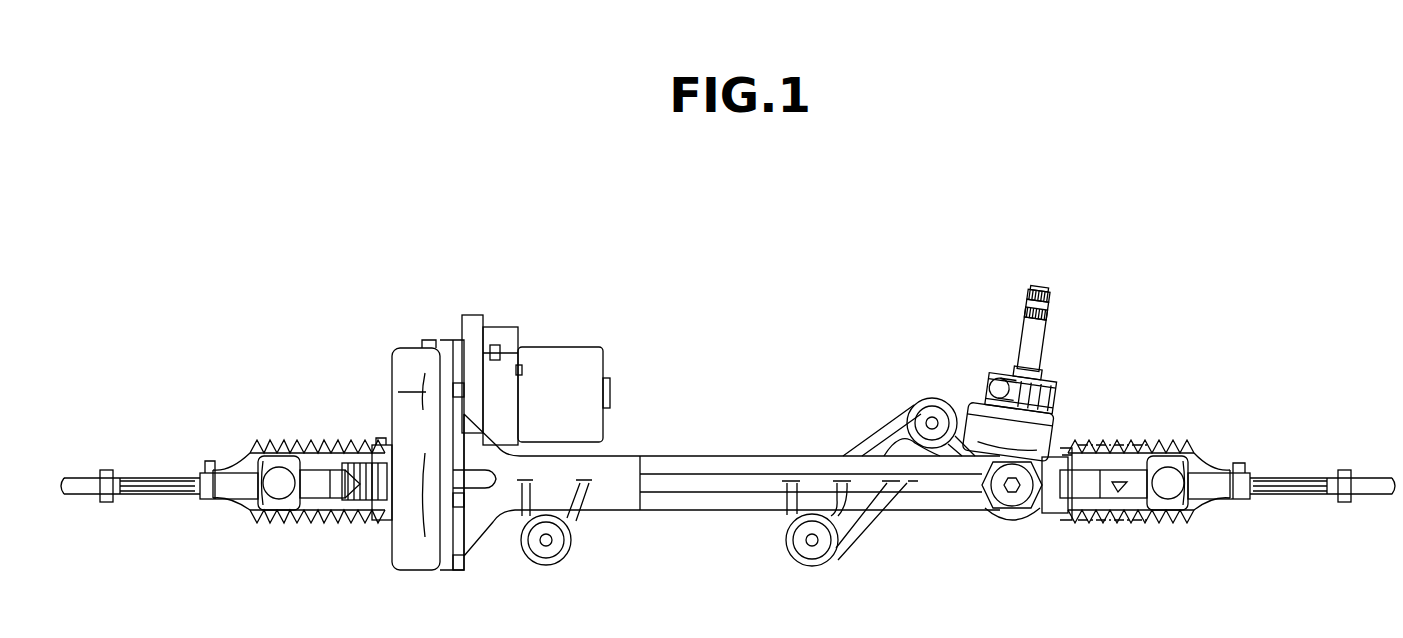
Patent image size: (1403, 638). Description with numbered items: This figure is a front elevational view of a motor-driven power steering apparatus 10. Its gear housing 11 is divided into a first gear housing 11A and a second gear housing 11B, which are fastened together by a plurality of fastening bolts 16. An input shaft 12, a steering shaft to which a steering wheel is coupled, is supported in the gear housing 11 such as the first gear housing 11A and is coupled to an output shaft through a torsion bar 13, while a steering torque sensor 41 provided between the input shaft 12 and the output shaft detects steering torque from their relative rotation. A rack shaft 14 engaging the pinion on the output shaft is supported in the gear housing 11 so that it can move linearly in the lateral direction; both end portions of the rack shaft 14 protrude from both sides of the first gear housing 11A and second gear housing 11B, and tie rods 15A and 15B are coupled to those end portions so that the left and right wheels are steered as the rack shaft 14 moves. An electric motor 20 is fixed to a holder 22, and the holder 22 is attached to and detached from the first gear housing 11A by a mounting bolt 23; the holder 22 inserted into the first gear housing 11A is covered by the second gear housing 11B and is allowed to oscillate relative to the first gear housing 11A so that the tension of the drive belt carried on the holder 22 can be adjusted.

The motor-driven power steering apparatus 10 is at (652, 314).
The gear housing 11 is at (792, 455).
The first gear housing 11A is at (612, 513).
The second gear housing 11B is at (397, 548).
The input shaft 12 is at (1070, 345).
The torsion bar 13 is at (1046, 277).
The rack shaft 14 is at (352, 440).
The tie rod 15A is at (1368, 497).
The tie rod 15B is at (85, 493).
The fastening bolt 16 is at (462, 570).
The electric motor 20 is at (565, 348).
The holder 22 is at (473, 315).
The mounting bolt 23 is at (495, 345).
The steering torque sensor 41 is at (1072, 389).